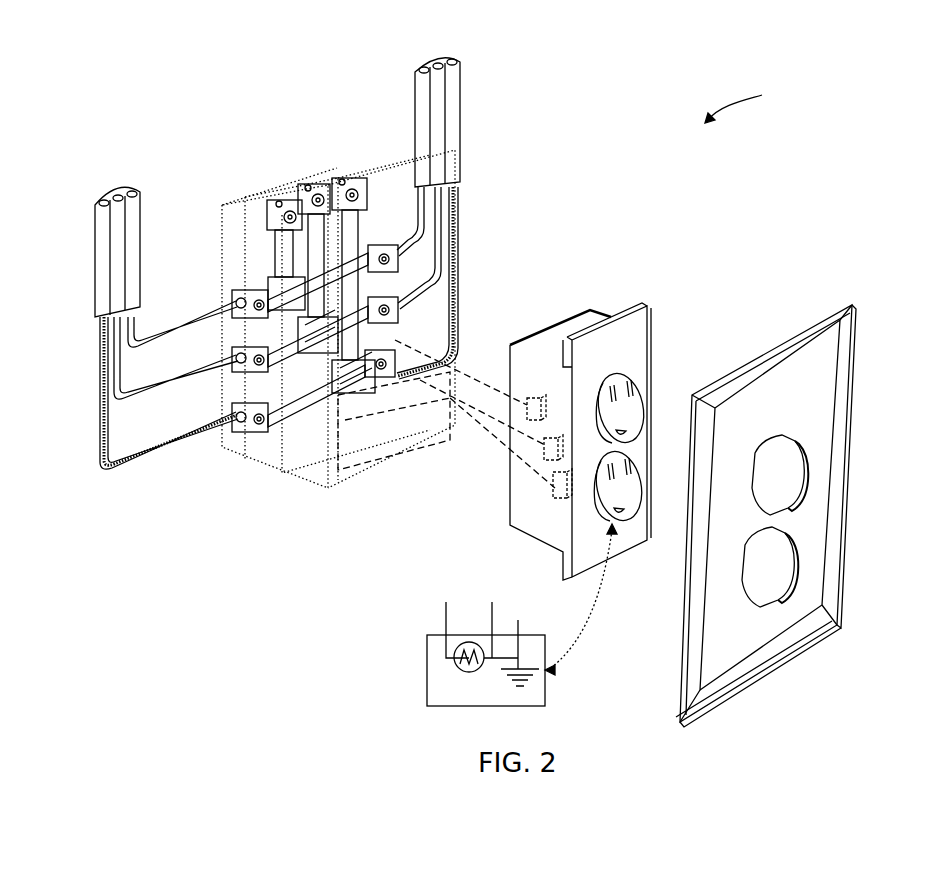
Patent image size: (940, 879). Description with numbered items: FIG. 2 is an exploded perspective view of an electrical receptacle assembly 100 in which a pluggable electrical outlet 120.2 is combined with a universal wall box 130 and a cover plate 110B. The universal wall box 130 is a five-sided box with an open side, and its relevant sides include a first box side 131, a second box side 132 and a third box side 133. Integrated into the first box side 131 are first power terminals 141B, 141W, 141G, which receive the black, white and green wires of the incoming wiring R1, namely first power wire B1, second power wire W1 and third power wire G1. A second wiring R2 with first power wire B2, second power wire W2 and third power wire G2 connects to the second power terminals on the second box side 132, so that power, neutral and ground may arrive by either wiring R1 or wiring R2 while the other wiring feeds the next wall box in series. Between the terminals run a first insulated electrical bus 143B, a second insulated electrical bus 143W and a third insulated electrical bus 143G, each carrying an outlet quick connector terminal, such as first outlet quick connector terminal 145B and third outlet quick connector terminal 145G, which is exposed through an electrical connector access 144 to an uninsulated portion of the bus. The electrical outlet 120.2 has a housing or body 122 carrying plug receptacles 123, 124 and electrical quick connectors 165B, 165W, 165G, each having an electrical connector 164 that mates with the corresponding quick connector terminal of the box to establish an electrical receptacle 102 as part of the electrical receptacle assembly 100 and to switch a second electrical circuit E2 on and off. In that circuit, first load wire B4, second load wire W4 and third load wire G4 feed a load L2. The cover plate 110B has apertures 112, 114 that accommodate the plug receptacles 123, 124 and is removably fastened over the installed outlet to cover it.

The electrical receptacle assembly 100 is at (760, 98).
The electrical receptacle 102 is at (733, 109).
The cover plate 110B is at (801, 514).
The aperture 112 is at (778, 470).
The aperture 114 is at (770, 567).
The electrical outlet 120.2 is at (610, 330).
The housing or body 122 is at (623, 395).
The plug receptacle 123 is at (645, 355).
The plug receptacle 124 is at (640, 478).
The universal wall box 130 is at (316, 470).
The first box side 131 is at (257, 232).
The second box side 132 is at (478, 206).
The third box side 133 is at (368, 157).
The first power terminal (black/hot) 141B is at (238, 288).
The first power terminal (white/neutral) 141W is at (235, 303).
The first power terminal (green/ground) 141G is at (236, 412).
The first insulated electrical bus 143B is at (260, 290).
The second insulated electrical bus 143W is at (322, 355).
The third insulated electrical bus 143G is at (335, 392).
The electrical connector access 144 is at (380, 363).
The first outlet quick connector terminal 145B is at (272, 300).
The third outlet quick connector terminal 145G is at (335, 365).
The electrical connector 164 is at (495, 430).
The electrical quick connector (black) 165B is at (527, 422).
The electrical quick connector (white) 165W is at (545, 462).
The electrical quick connector (green) 165G is at (560, 500).
The wiring R1 is at (96, 235).
The wiring R2 is at (461, 82).
The first power wire (black/hot) B1 is at (192, 326).
The second power wire (white/neutral) W1 is at (192, 378).
The third power wire (green/ground) G1 is at (187, 438).
The first power wire (black/hot) B2 is at (412, 242).
The second power wire (white/neutral) W2 is at (442, 286).
The third power wire (green/ground) G2 is at (442, 330).
The first load wire B4 is at (453, 620).
The second load wire W4 is at (495, 620).
The third load wire G4 is at (511, 643).
The load L2 is at (450, 644).
The second electrical circuit E2 is at (613, 607).